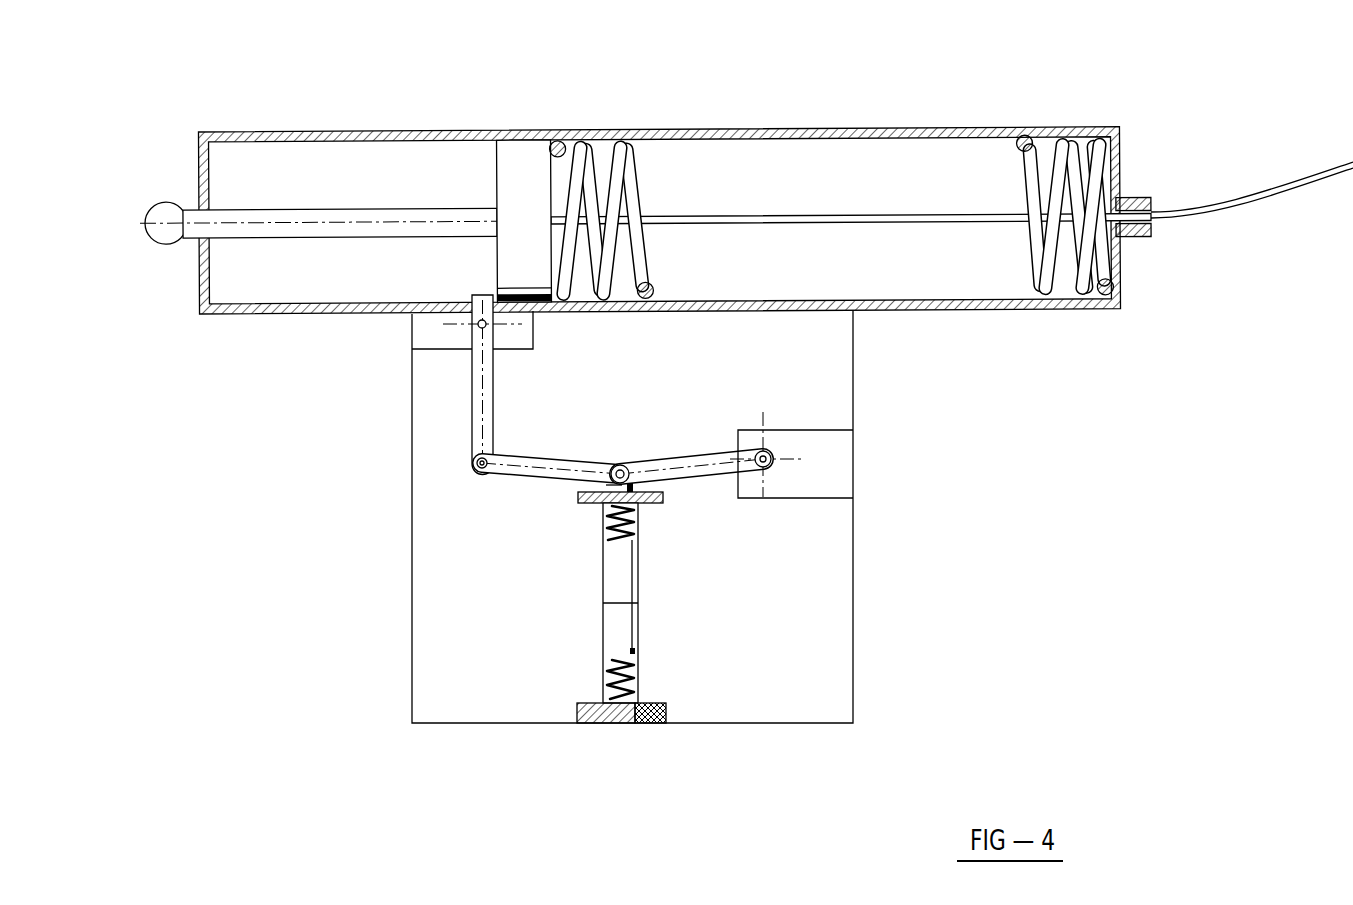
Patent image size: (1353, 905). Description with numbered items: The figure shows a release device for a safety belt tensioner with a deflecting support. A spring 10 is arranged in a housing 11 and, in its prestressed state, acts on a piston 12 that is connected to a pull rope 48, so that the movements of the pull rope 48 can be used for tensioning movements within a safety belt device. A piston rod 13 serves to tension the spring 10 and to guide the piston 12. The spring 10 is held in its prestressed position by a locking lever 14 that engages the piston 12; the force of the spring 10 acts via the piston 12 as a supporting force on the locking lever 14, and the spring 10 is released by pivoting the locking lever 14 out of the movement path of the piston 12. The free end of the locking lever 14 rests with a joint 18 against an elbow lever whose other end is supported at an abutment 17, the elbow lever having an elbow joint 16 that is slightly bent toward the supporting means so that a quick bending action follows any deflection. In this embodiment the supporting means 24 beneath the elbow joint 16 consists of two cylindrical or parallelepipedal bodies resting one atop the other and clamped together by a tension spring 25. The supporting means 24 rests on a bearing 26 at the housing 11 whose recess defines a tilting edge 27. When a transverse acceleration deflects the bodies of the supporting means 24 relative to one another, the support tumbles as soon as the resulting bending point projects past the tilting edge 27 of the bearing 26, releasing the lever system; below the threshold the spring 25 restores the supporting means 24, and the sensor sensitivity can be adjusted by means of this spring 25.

The spring 10 is at (590, 140).
The housing 11 is at (795, 128).
The piston 12 is at (512, 152).
The piston rod 13 is at (282, 216).
The locking lever 14 is at (478, 392).
The elbow joint 16 is at (607, 478).
The abutment 17 is at (843, 445).
The joint 18 is at (472, 462).
The supporting means 24 is at (620, 568).
The spring 25 is at (605, 680).
The bearing 26 is at (637, 723).
The tilting edge 27 is at (663, 723).
The pull rope 48 is at (1256, 197).